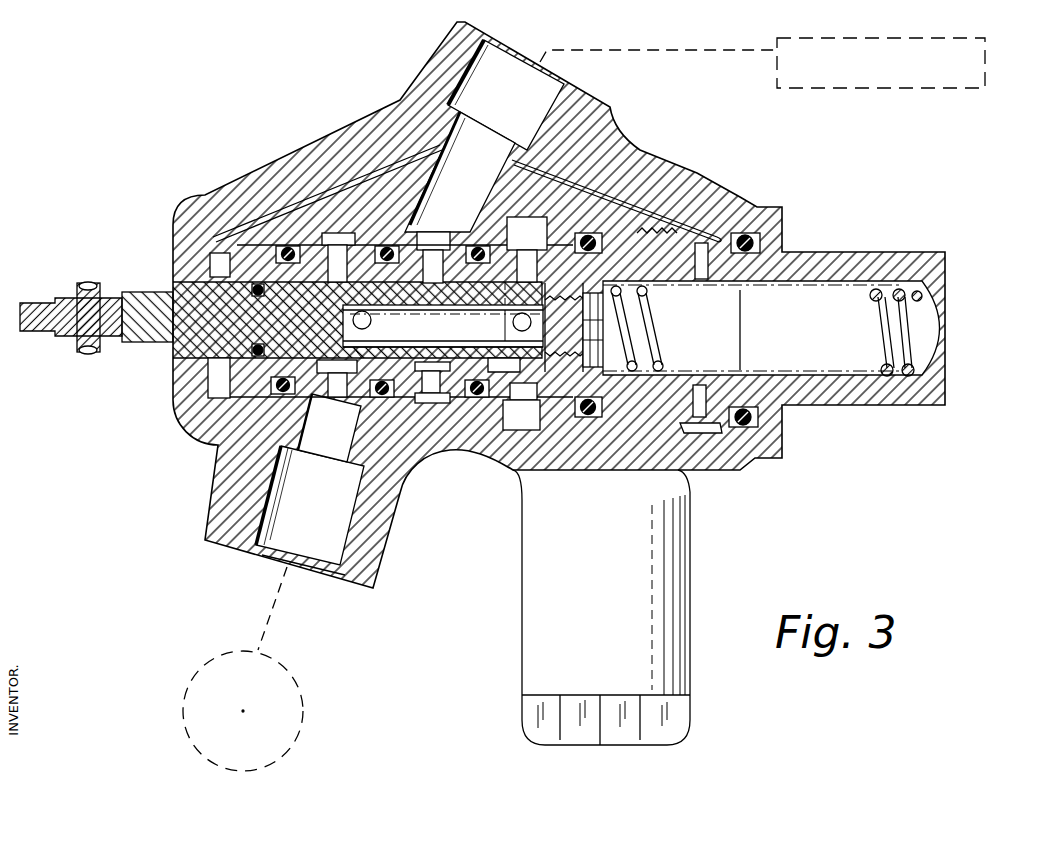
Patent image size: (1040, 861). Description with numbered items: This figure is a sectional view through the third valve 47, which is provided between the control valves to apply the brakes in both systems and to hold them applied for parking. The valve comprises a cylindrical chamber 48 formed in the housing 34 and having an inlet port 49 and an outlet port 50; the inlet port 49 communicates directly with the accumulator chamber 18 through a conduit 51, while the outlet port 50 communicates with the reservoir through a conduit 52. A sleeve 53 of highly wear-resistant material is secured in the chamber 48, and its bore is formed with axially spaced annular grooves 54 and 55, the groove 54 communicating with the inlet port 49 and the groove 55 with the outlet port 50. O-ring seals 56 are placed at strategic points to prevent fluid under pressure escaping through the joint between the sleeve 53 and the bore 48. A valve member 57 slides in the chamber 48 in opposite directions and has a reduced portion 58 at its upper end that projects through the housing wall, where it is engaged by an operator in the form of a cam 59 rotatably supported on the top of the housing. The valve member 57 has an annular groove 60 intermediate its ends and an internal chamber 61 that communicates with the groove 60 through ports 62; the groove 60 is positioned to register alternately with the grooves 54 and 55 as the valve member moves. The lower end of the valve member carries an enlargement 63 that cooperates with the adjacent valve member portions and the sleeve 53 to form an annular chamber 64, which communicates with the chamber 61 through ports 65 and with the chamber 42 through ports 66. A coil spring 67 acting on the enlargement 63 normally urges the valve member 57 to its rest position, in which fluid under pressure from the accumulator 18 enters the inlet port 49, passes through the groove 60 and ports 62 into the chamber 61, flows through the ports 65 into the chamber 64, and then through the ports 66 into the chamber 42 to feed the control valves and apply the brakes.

The accumulator chamber 18 is at (302, 695).
The housing 34 is at (313, 158).
The chamber 42 is at (520, 413).
The third valve 47 is at (807, 240).
The cylindrical chamber 48 is at (267, 255).
The inlet port 49 is at (323, 543).
The outlet port 50 is at (515, 62).
The conduit 51 is at (273, 610).
The conduit 52 is at (650, 50).
The sleeve 53 is at (252, 382).
The annular groove 54 is at (362, 350).
The annular groove 55 is at (423, 368).
The O-ring seals 56 is at (277, 386).
The valve member 57 is at (236, 292).
The reduced portion 58 is at (163, 327).
The cam 59 is at (35, 322).
The annular groove 60 is at (357, 355).
The chamber 61 is at (458, 325).
The ports 62 is at (366, 320).
The enlargement 63 is at (566, 360).
The annular chamber 64 is at (500, 362).
The ports 65 is at (527, 350).
The ports 66 is at (521, 406).
The coil spring 67 is at (890, 290).